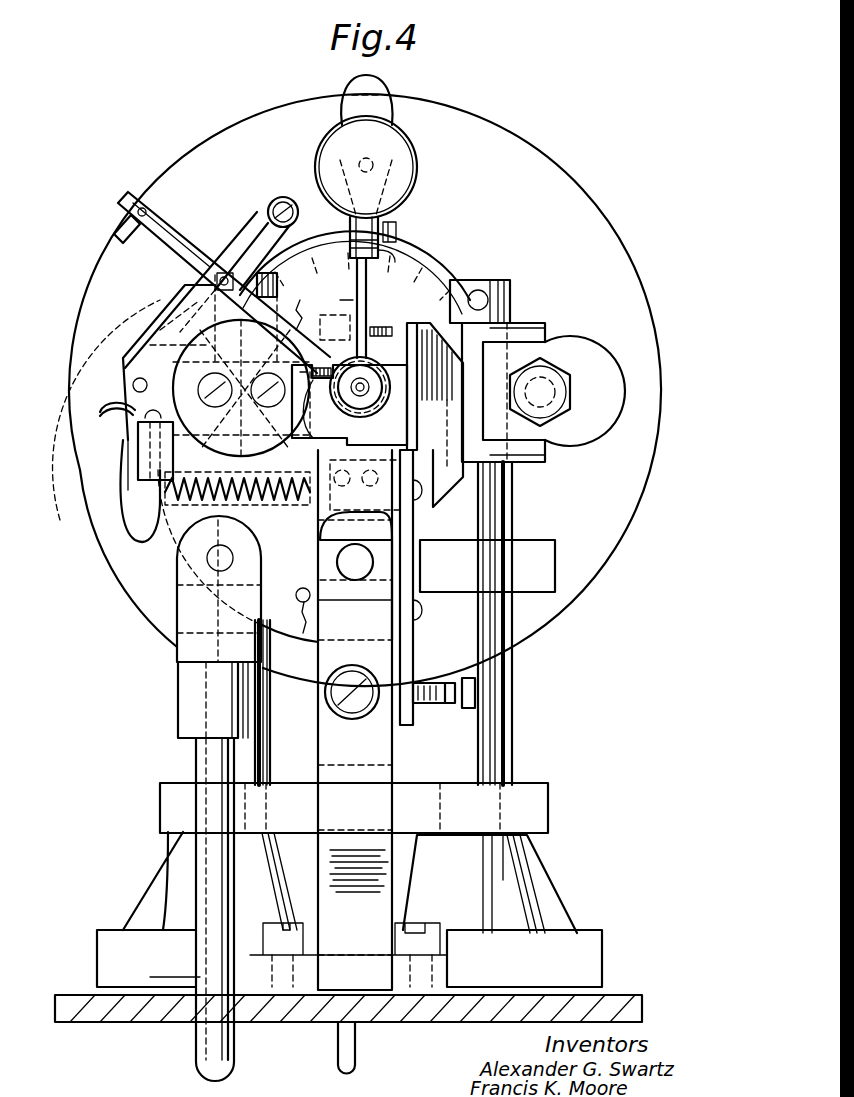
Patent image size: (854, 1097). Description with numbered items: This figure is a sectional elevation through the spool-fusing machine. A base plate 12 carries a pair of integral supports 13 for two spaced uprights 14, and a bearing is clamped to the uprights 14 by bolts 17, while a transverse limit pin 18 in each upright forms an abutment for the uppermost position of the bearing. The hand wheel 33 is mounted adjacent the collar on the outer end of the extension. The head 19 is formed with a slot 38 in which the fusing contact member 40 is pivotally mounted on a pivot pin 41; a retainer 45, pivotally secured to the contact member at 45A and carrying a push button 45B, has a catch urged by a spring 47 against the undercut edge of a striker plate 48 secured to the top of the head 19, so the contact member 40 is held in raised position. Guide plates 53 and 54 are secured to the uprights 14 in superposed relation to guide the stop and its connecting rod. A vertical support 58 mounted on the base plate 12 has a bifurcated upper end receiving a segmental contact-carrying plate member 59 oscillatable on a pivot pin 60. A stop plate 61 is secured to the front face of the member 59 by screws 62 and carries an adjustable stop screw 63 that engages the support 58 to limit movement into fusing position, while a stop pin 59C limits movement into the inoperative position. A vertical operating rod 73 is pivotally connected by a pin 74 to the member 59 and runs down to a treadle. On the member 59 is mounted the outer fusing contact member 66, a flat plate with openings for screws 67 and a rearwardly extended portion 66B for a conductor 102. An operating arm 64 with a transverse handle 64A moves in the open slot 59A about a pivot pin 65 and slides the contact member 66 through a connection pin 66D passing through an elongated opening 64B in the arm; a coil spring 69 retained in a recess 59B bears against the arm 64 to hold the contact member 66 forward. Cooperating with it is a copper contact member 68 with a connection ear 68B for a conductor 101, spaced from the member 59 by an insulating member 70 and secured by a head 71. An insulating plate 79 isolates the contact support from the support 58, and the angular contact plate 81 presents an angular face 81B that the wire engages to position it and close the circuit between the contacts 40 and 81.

The base plate 12 is at (615, 1005).
The integral supports 13 is at (185, 852).
The uprights 14 is at (505, 282).
The bolts 17 is at (552, 375).
The transverse limit pin 18 is at (485, 298).
The head 19 is at (445, 285).
The hand wheel 33 is at (575, 205).
The slot 38 is at (339, 297).
The fusing contact member 40 is at (368, 303).
The pivot pin 41 is at (393, 319).
The retainer 45 is at (385, 95).
The pivot 45A is at (398, 225).
The push button 45B is at (395, 150).
The spring 47 is at (396, 250).
The striker plate 48 is at (418, 272).
The guide plate 53 is at (530, 548).
The guide plate 54 is at (540, 803).
The vertical support 58 is at (368, 750).
The contact-carrying plate member 59 is at (187, 510).
The open slot 59A is at (92, 562).
The recess 59B is at (290, 505).
The stop pin 59C is at (291, 623).
The pivot pin 60 is at (370, 575).
The stop plate 61 is at (413, 665).
The screws 62 is at (422, 500).
The adjustable stop screw 63 is at (470, 690).
The operating arm 64 is at (258, 226).
The handle 64A is at (285, 196).
The elongated opening 64B is at (282, 256).
The pivot pin 65 is at (132, 385).
The outer fusing contact member 66 is at (195, 243).
The rearwardly extended portion 66B is at (165, 212).
The connection pin 66D is at (256, 273).
The screws 67 is at (320, 315).
The electrical contact member 68 is at (305, 440).
The connection ear 68B is at (138, 446).
The coil spring 69 is at (237, 491).
The insulating member 70 is at (340, 435).
The head 71 is at (200, 345).
The operating rod 73 is at (200, 752).
The pin 74 is at (210, 565).
The insulating plate 79 is at (325, 720).
The angular contact plate 81 is at (428, 330).
The angular face 81B is at (398, 355).
The conductor 101 is at (100, 414).
The conductor 102 is at (115, 236).